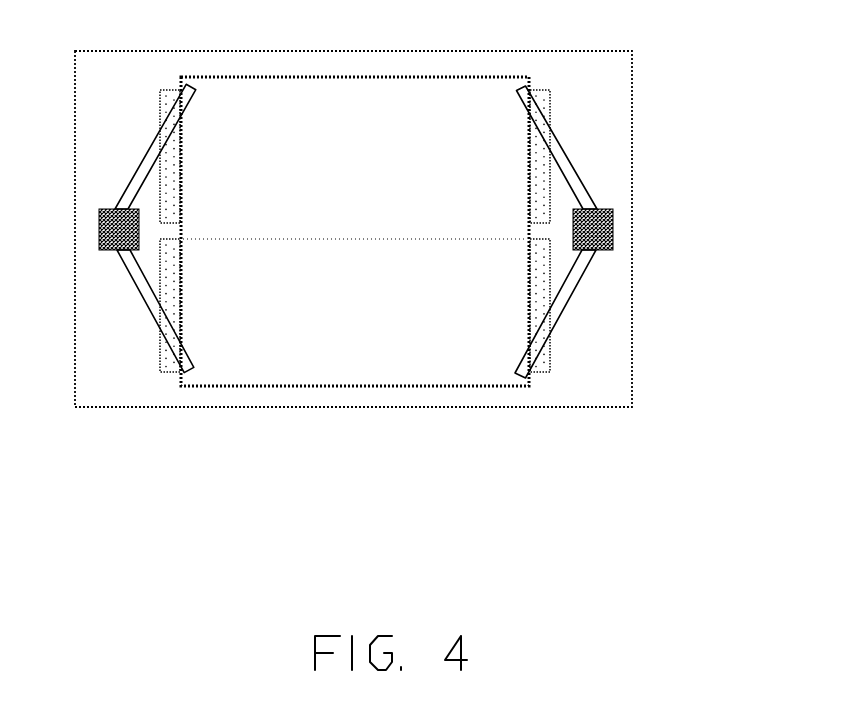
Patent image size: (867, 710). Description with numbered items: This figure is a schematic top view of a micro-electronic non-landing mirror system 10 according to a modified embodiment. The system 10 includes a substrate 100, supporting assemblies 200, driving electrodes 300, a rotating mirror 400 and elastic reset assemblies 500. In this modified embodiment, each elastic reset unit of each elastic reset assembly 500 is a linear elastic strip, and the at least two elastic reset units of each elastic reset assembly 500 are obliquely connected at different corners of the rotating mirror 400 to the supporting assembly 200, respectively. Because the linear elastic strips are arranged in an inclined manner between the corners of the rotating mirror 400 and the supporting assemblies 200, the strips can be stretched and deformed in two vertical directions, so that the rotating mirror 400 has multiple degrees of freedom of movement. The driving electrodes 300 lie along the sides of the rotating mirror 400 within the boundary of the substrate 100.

The micro-electronic non-landing mirror system 10 is at (612, 24).
The substrate 100 is at (548, 410).
The supporting assembly 200 is at (100, 231).
The driving electrode 300 is at (565, 363).
The rotating mirror 400 is at (406, 335).
The elastic reset assembly 500 is at (577, 292).